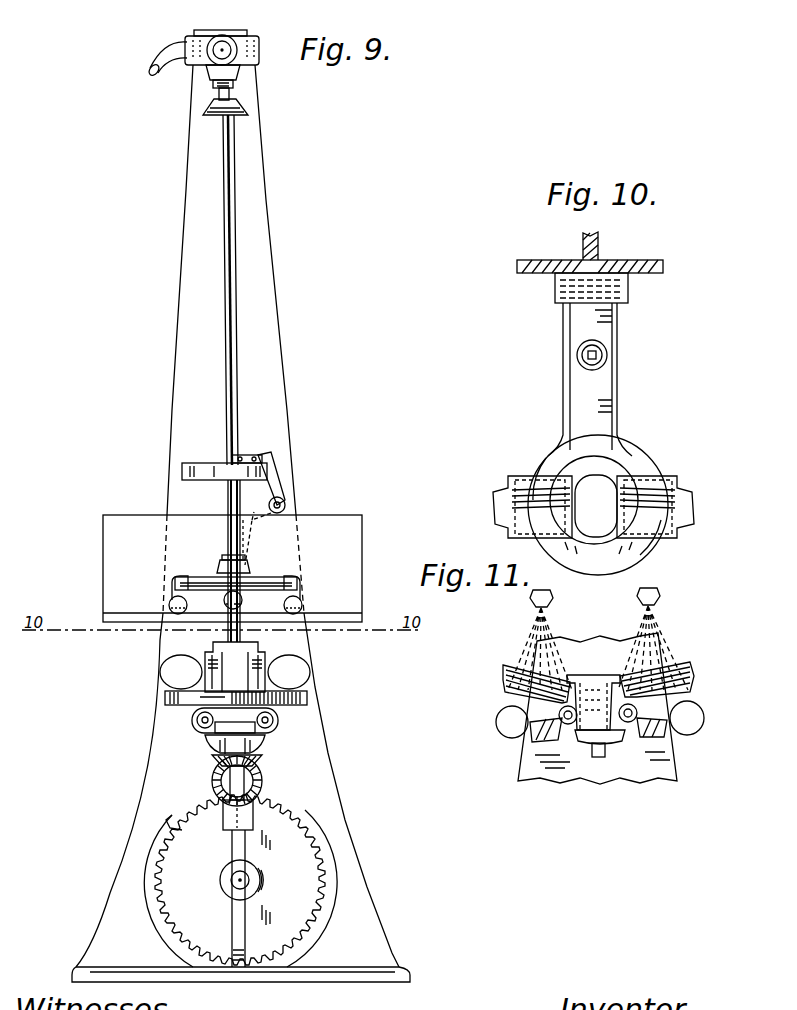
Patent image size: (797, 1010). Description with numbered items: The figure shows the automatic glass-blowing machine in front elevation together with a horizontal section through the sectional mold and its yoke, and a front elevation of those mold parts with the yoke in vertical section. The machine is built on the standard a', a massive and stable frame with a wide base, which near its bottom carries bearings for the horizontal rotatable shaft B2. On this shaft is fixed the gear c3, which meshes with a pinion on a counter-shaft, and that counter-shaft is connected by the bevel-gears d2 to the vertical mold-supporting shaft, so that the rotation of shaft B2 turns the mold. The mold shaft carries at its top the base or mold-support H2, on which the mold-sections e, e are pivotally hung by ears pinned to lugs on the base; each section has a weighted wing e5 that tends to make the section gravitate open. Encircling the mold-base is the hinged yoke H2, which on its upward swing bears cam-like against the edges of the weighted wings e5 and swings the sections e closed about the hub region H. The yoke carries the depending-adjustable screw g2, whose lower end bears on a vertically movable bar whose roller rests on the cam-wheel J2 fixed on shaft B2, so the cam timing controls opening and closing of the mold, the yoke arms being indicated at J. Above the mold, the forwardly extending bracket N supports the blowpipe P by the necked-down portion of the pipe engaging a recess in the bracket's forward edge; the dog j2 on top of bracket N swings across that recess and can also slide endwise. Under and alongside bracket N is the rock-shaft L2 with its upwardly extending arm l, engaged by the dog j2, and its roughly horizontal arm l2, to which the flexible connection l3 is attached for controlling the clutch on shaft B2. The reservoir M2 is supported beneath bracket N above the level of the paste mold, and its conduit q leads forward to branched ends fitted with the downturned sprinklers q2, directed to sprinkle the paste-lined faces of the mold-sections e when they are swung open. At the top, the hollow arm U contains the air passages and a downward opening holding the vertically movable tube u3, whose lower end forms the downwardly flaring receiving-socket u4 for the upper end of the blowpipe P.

In FIG. 9, the hollow arm U is at (244, 42).
In FIG. 9, the vertically-movable tube u3 is at (217, 88).
In FIG. 9, the receiving-socket u4 is at (210, 113).
In FIG. 9, the blowpipe P is at (239, 358).
In FIG. 9, the bracket N is at (226, 463).
In FIG. 9, the dog j2 is at (247, 455).
In FIG. 9, the arm l is at (273, 487).
In FIG. 9, the rock-shaft L2 is at (285, 505).
In FIG. 9, the arm l2 is at (258, 538).
In FIG. 9, the flexible connection l3 is at (240, 538).
In FIG. 9, the conduit q is at (252, 576).
In FIG. 9, the sprinklers q2 is at (316, 601).
In FIG. 11, the sprinklers q2 is at (700, 594).
In FIG. 9, the reservoir M2 is at (232, 568).
In FIG. 9, the arm J is at (262, 657).
In FIG. 10, the arm J is at (523, 477).
In FIG. 11, the arm J is at (504, 690).
In FIG. 9, the mold-sections e is at (239, 673).
In FIG. 11, the mold-sections e is at (590, 695).
In FIG. 9, the weighted wings e5 is at (235, 672).
In FIG. 11, the weighted wings e5 is at (722, 722).
In FIG. 9, the mold-support / hinged yoke H2 is at (308, 700).
In FIG. 10, the mold-support / hinged yoke H2 is at (598, 492).
In FIG. 11, the mold-support / hinged yoke H2 is at (680, 754).
In FIG. 9, the hub H is at (262, 744).
In FIG. 10, the hub H is at (596, 506).
In FIG. 11, the hub H is at (600, 720).
In FIG. 9, the bevel-gears d2 is at (222, 785).
In FIG. 9, the cam-wheel J2 is at (300, 812).
In FIG. 9, the horizontal rotatable shaft B2 is at (238, 880).
In FIG. 9, the gear c3 is at (318, 887).
In FIG. 10, the standard a' is at (590, 250).
In FIG. 10, the depending-adjustable screw g2 is at (607, 355).